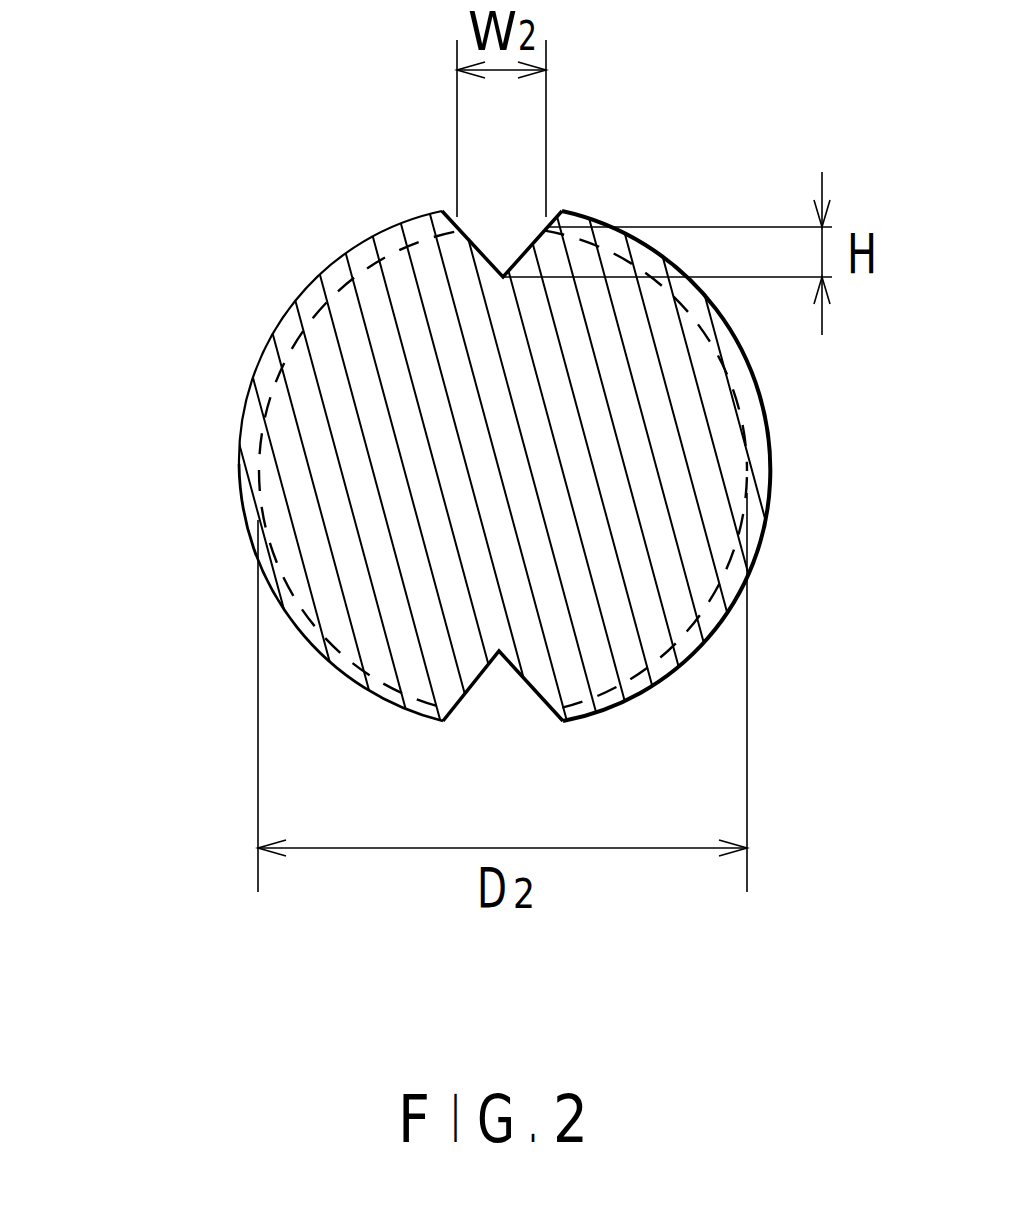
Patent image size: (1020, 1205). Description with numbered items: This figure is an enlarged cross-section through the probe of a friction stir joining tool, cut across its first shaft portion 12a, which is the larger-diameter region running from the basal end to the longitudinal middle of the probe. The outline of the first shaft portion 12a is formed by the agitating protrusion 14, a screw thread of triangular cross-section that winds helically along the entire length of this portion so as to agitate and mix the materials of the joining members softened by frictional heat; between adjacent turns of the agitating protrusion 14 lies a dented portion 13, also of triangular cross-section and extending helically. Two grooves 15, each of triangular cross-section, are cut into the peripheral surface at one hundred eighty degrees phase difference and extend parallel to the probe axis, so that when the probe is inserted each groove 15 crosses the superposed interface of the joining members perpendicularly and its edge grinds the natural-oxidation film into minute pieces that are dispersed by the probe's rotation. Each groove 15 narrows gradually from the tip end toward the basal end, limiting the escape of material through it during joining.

The first shaft portion 12a is at (690, 420).
The dented portion 13 is at (302, 287).
The agitating protrusion 14 is at (267, 350).
The groove 15 is at (477, 244).